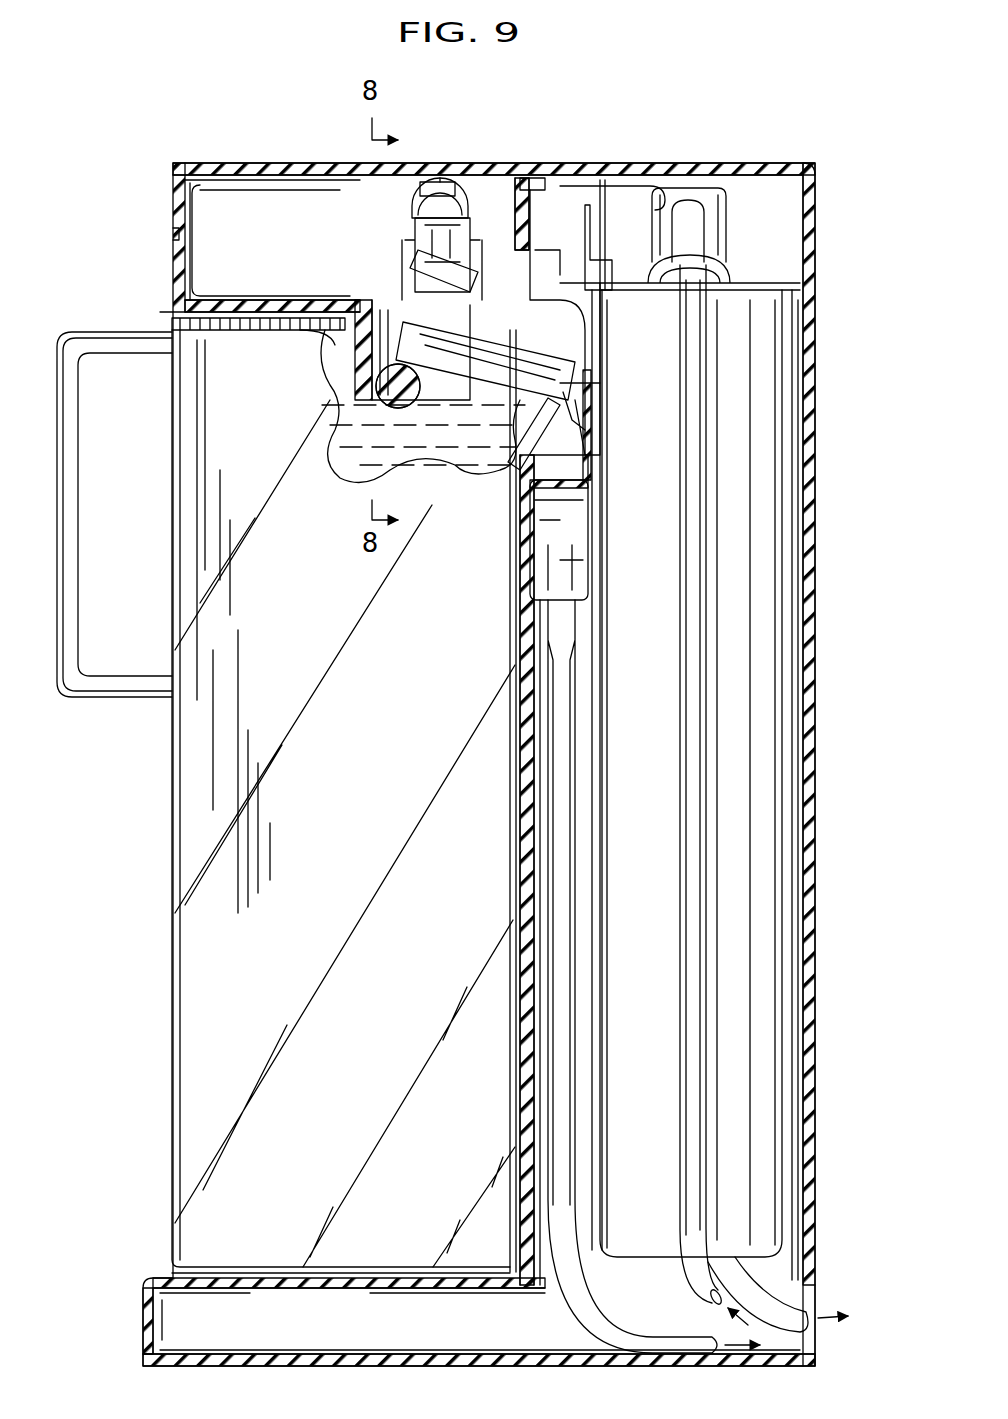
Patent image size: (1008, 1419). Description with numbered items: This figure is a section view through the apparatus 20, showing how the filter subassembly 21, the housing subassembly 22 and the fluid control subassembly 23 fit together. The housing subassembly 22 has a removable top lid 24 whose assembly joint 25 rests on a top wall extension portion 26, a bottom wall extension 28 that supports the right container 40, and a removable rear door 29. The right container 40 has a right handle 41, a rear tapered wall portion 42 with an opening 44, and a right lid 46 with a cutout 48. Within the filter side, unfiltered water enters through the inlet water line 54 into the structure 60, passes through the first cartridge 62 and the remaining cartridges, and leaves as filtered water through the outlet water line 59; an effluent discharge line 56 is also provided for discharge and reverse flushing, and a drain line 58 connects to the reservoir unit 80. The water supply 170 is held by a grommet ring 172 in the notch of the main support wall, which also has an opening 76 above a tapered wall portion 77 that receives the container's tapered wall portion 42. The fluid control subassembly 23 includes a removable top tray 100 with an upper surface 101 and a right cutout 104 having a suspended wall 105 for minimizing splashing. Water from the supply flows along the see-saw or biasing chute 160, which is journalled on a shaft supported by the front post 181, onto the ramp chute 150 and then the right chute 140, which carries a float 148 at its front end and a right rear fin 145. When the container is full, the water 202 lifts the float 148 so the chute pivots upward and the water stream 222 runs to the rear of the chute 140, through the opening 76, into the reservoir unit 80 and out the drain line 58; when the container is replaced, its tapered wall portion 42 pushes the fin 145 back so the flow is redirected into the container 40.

The apparatus 20 is at (186, 122).
The filter subassembly 21 is at (700, 192).
The housing subassembly 22 is at (822, 186).
The fluid control subassembly 23 is at (479, 214).
The removable top lid 24 is at (757, 163).
The assembly joint 25 is at (178, 232).
The top wall extension portion 26 is at (180, 291).
The bottom wall extension 28 is at (143, 1304).
The removable rear door 29 is at (815, 1093).
The right container 40 is at (205, 949).
The right handle 41 is at (107, 715).
The rear tapered wall portion 42 is at (489, 433).
The opening 44 is at (578, 300).
The right lid 46 is at (222, 322).
The cutout 48 is at (345, 358).
The inlet water line 54 is at (700, 700).
The effluent discharge line 56 is at (782, 1308).
The drain line 58 is at (593, 1312).
The outlet water line 59 is at (650, 186).
The structure 60 is at (733, 272).
The first cartridge 62 is at (765, 906).
The opening 76 is at (535, 318).
The tapered wall portion 77 is at (590, 462).
The reservoir unit 80 is at (572, 536).
The removable top tray 100 is at (280, 292).
The upper surface 101 is at (218, 310).
The right cutout 104 is at (368, 298).
The suspended wall 105 is at (335, 383).
The right chute 140 is at (590, 356).
The right rear fin 145 is at (455, 483).
The float 148 is at (330, 425).
The ramp chute 150 is at (410, 216).
The see-saw or biasing chute 160 is at (428, 196).
The water supply 170 is at (437, 185).
The grommet ring 172 is at (549, 243).
The front post 181 is at (396, 276).
The water 202 is at (335, 458).
The water stream 222 is at (590, 421).